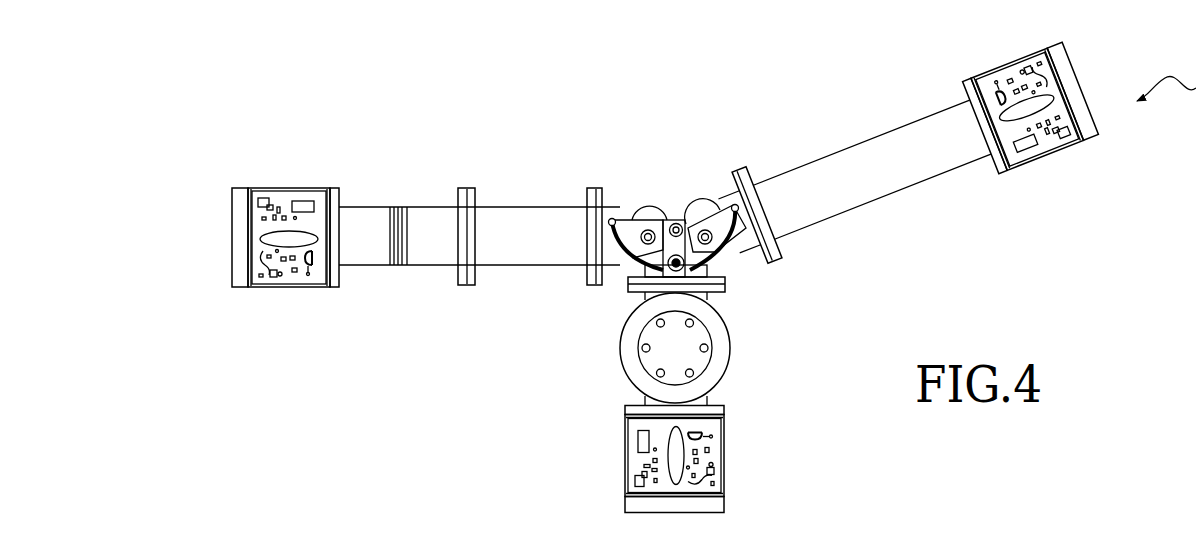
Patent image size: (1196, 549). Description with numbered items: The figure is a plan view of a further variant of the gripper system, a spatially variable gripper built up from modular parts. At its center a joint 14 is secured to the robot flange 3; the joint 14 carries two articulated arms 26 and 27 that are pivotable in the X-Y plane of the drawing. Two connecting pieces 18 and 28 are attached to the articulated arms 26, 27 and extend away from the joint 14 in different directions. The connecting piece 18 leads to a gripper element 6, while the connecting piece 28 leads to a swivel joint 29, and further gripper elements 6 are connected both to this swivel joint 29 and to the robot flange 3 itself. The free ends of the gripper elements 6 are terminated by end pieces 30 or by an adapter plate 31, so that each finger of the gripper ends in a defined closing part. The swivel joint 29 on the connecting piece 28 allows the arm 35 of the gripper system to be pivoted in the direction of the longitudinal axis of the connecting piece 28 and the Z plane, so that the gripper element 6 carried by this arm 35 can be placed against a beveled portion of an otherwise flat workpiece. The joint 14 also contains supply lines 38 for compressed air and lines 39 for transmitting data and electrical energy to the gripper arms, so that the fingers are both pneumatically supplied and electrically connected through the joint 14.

The robot flange 3 is at (702, 360).
The gripper element 6 is at (280, 187).
The joint 14 is at (722, 277).
The connecting piece 18 is at (890, 182).
The articulated arm 26 is at (628, 217).
The articulated arm 27 is at (722, 210).
The connecting piece 28 is at (525, 262).
The swivel joint 29 is at (452, 262).
The end piece 30 is at (238, 207).
The adapter plate 31 is at (718, 505).
The arm 35 is at (473, 178).
The supply line 38 is at (727, 250).
The line 39 is at (687, 213).